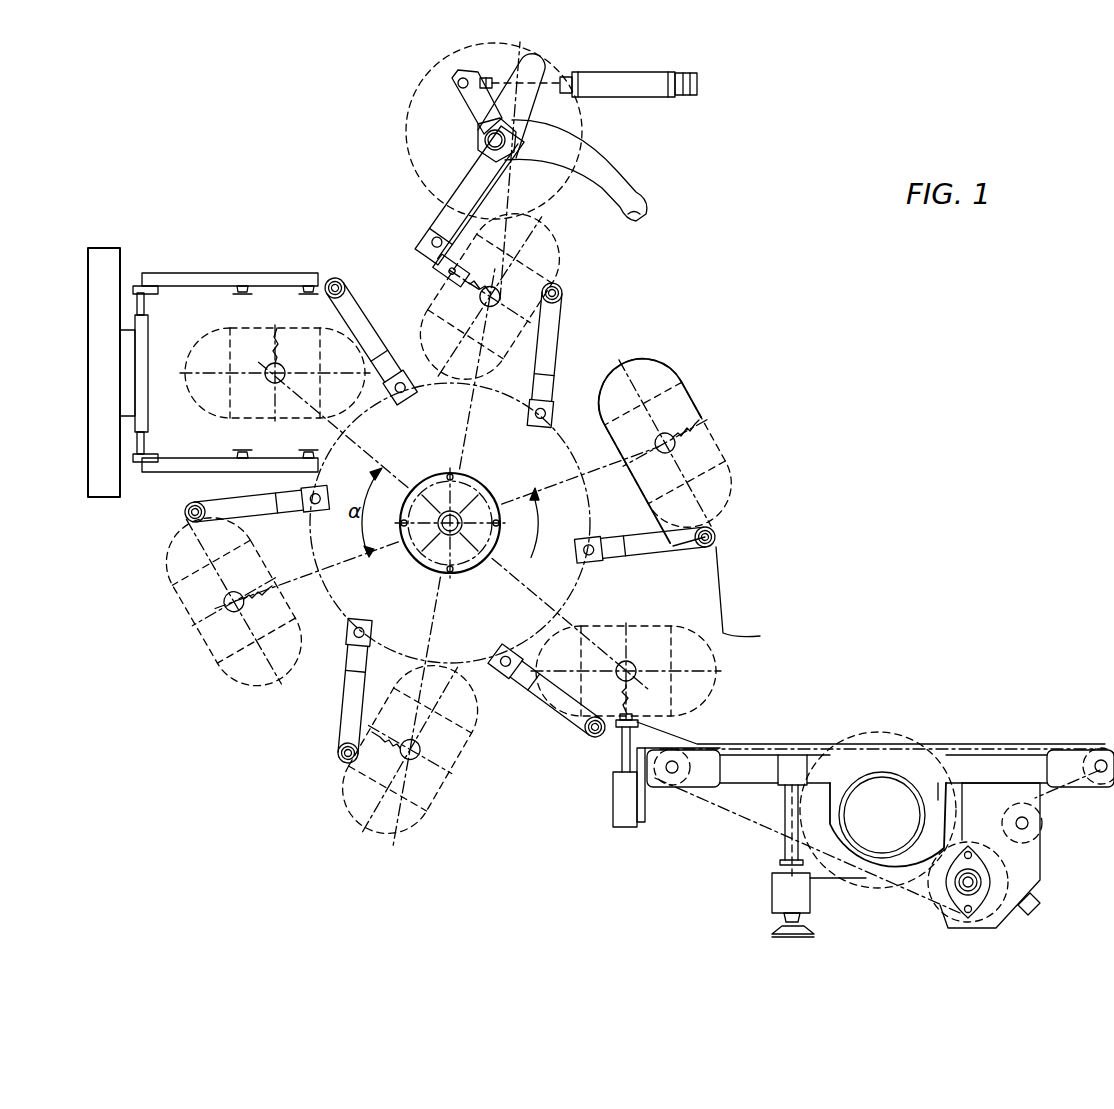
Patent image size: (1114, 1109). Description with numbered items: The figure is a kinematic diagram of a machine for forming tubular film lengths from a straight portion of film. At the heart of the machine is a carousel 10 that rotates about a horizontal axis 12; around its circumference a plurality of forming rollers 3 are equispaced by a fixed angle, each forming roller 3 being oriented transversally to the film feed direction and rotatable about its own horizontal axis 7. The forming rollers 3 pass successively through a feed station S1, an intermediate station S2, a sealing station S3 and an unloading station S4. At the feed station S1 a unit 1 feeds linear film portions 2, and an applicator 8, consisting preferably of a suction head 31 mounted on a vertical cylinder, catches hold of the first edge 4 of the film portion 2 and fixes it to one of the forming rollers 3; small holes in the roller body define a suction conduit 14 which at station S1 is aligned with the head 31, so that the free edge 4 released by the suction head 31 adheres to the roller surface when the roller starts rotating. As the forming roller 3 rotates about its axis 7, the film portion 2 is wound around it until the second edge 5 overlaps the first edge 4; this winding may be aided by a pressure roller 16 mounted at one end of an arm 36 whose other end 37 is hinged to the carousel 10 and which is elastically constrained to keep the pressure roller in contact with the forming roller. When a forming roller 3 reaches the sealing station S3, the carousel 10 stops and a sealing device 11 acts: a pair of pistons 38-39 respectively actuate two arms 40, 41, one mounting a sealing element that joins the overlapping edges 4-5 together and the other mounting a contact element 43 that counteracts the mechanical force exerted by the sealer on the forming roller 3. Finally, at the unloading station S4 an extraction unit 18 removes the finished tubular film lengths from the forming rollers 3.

The unit for feeding linear film portions 1 is at (843, 773).
The film portion 2 is at (724, 590).
The forming roller 3 is at (732, 487).
The first edge 4 is at (705, 422).
The second edge 5 is at (760, 636).
The horizontal axis 7 is at (675, 444).
The applicator 8 is at (634, 850).
The carousel 10 is at (520, 459).
The sealing device 11 is at (520, 175).
The horizontal axis 12 is at (341, 691).
The suction conduit 14 is at (697, 400).
The pressure roller 16 is at (560, 285).
The extraction unit 18 is at (130, 503).
The suction head 31 is at (615, 780).
The arm 36 is at (522, 730).
The other end of arm 37 is at (562, 707).
The pair of pistons 38-39 is at (664, 92).
The arm 40 is at (462, 197).
The arm 41 is at (642, 196).
The contact element 43 is at (630, 220).
The first and second edges 4-5 is at (450, 288).
The feed station S1 is at (522, 730).
The station S2 is at (769, 536).
The sealing station S3 is at (575, 341).
The unloading station S4 is at (352, 261).